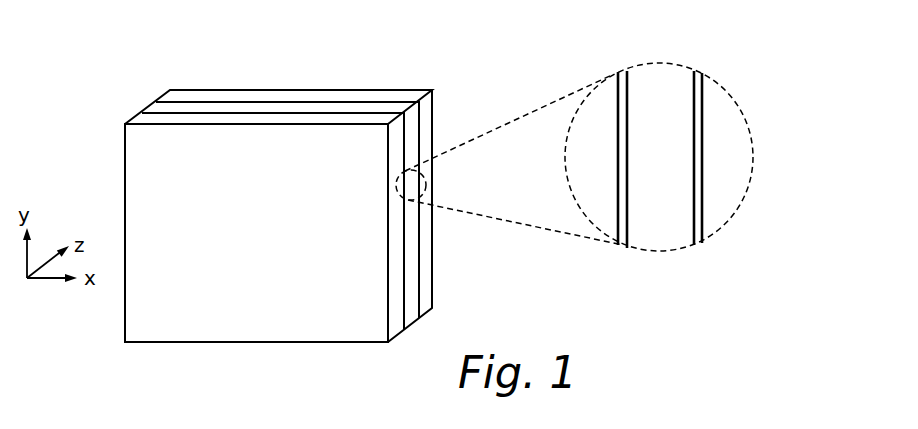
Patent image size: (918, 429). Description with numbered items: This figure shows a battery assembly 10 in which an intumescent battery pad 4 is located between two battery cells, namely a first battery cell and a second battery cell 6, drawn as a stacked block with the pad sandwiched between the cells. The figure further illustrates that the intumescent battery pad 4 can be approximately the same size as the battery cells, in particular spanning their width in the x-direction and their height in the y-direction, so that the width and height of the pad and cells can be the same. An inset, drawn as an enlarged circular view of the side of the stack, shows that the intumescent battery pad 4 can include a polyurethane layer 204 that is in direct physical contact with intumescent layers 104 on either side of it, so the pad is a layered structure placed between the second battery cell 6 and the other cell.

The battery assembly 10 is at (135, 78).
The intumescent battery pad 4 is at (272, 107).
The second battery cell 6 is at (355, 95).
The intumescent layers 104 is at (701, 148).
The polyurethane layer 204 is at (654, 103).